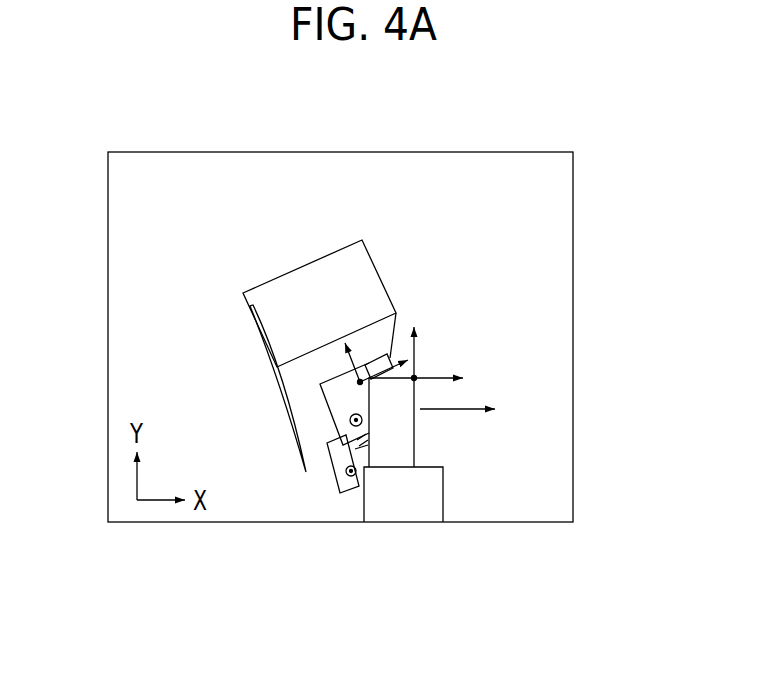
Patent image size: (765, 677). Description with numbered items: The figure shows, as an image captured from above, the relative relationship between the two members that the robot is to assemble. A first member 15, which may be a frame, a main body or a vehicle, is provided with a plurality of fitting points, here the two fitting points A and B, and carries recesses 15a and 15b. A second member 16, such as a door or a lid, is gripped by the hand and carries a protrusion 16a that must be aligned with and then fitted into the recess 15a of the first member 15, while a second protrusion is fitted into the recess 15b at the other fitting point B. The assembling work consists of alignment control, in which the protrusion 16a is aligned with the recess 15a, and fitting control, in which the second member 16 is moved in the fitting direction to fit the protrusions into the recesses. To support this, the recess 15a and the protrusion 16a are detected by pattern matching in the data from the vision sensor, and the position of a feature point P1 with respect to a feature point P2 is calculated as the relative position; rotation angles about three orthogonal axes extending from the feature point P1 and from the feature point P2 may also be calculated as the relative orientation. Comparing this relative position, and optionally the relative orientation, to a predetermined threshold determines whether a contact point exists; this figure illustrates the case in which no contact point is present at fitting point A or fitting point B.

The first member 15 is at (268, 305).
The recess 15a is at (343, 403).
The recess 15b is at (330, 476).
The second member 16 is at (418, 505).
The protrusion 16a is at (395, 437).
The fitting point A is at (348, 420).
The fitting point B is at (348, 477).
The feature point P1 is at (362, 380).
The feature point P2 is at (415, 376).